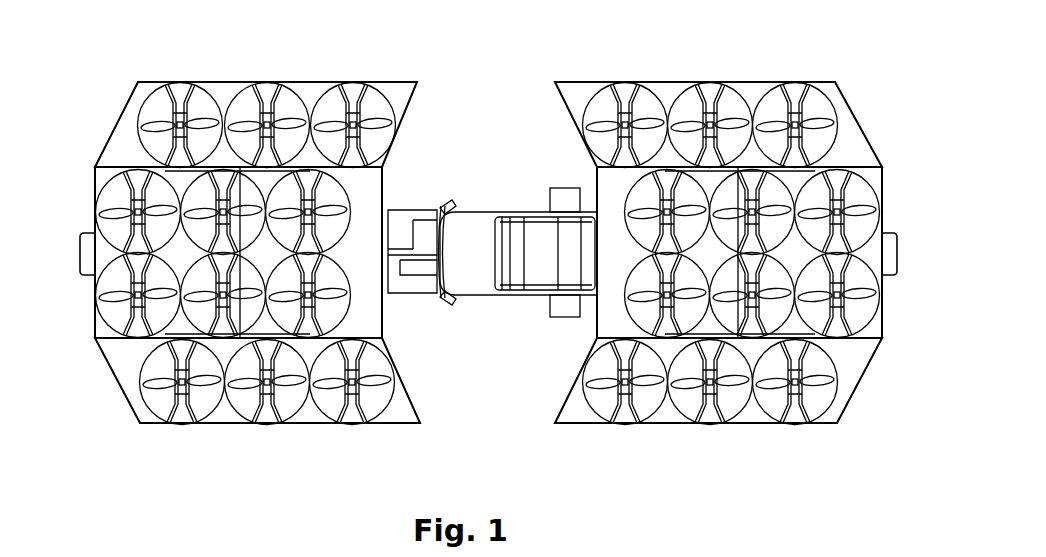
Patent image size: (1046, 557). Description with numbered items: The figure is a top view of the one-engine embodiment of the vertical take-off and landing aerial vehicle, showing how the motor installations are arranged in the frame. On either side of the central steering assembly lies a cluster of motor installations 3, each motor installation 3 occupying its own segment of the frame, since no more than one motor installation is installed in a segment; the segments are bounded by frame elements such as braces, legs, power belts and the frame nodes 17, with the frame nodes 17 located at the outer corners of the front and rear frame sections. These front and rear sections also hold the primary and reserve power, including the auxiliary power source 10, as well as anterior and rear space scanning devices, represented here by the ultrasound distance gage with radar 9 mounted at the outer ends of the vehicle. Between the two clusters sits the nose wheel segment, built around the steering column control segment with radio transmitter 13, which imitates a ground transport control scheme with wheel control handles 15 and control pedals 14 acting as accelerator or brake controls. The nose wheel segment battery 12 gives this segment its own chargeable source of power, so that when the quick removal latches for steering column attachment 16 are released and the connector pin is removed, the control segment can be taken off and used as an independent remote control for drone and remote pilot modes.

The motor installation 3 is at (210, 108).
The ultrasound distance gage with radar 9 is at (86, 238).
The auxiliary power source 10 is at (273, 240).
The nose wheel segment battery 12 is at (457, 312).
The steering column control segment with radio transmitter 13 is at (433, 205).
The control pedals 14 is at (566, 193).
The wheel control handles 15 is at (452, 195).
The quick removal latches for steering column attachment 16 is at (392, 213).
The frame nodes 17 is at (150, 78).